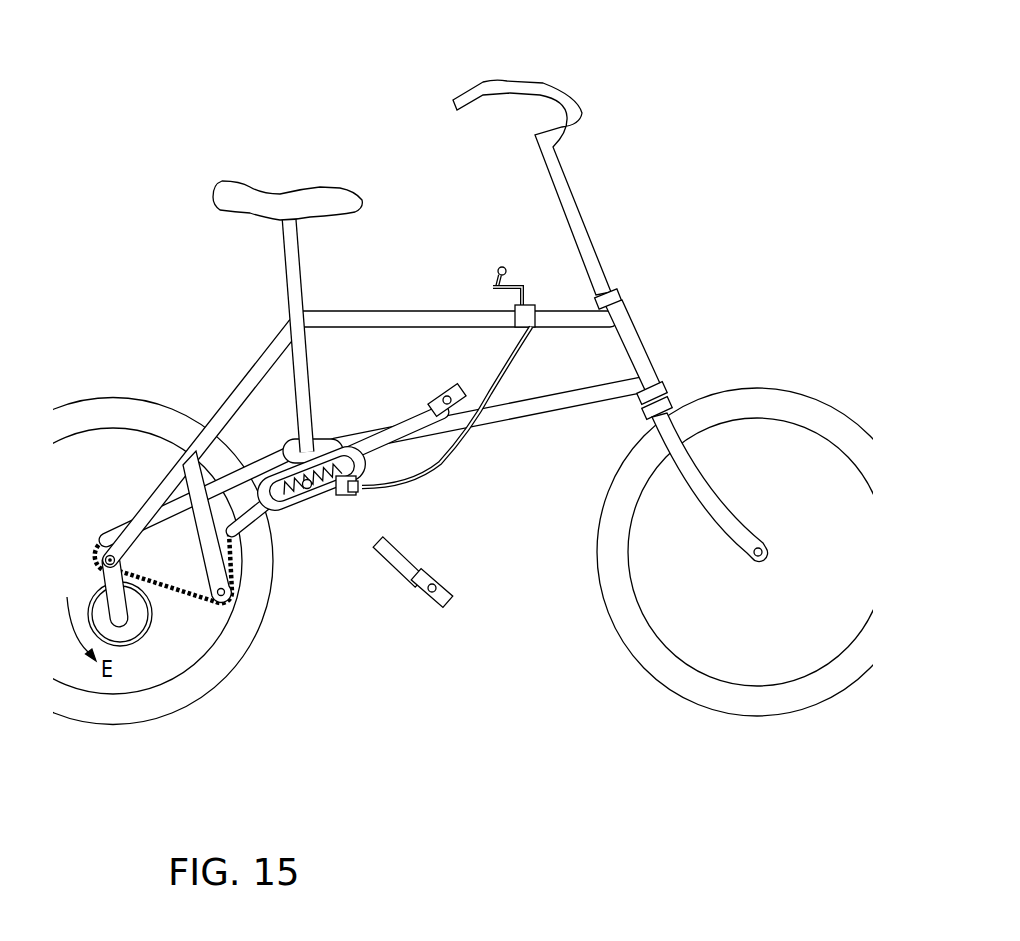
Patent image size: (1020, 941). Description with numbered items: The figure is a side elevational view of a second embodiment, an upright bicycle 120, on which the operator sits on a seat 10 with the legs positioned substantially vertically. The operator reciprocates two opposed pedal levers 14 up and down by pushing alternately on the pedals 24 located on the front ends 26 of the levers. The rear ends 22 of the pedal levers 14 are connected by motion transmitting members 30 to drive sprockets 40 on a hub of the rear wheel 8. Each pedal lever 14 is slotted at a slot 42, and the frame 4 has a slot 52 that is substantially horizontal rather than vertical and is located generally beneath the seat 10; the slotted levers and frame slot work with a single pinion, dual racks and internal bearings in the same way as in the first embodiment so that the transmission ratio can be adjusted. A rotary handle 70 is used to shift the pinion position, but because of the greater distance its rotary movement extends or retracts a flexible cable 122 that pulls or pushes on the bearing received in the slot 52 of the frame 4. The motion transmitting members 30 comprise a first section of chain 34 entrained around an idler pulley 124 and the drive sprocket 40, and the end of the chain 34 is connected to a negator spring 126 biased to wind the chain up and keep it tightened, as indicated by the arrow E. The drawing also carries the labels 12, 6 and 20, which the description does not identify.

The upright bicycle 120 is at (400, 192).
The handlebar 12 is at (537, 82).
The seat 10 is at (272, 195).
The frame 4 is at (408, 311).
The rotary handle 70 is at (512, 282).
The front wheel 6 is at (773, 388).
The rear wheel 8 is at (110, 398).
The pedal levers 14 is at (390, 400).
The pedals 24 is at (453, 392).
The flexible cable 122 is at (523, 353).
The drive housing 20 is at (283, 445).
The first section of chain 34 is at (143, 530).
The drive sprockets 40 is at (102, 543).
The negator spring 126 is at (100, 610).
The front ends 26 is at (407, 428).
The slot 42 is at (298, 516).
The slot 52 is at (344, 504).
The rear ends 22 is at (250, 517).
The idler pulley 124 is at (230, 610).
The motion transmitting members 30 is at (168, 599).